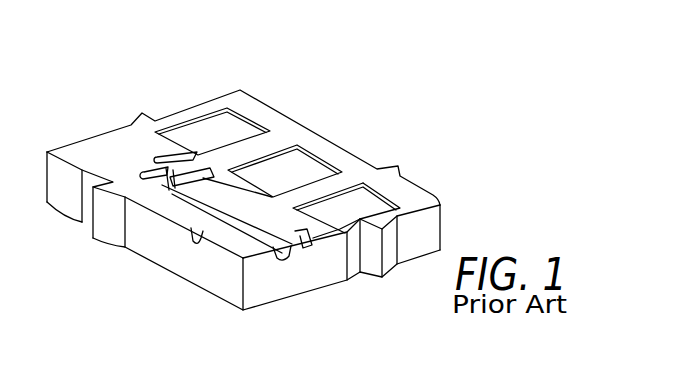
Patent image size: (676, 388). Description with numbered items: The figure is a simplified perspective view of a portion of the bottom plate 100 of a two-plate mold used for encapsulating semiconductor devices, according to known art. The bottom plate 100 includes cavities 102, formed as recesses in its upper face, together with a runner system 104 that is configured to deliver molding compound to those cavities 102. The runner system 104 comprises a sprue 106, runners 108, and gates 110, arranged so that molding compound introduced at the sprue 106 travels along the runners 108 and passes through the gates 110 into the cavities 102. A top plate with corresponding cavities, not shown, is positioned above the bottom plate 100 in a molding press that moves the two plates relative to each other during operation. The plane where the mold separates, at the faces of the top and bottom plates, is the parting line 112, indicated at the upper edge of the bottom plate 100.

The bottom plate 100 is at (148, 249).
The cavities 102 is at (300, 170).
The runner system 104 is at (131, 158).
The sprue 106 is at (193, 245).
The runners 108 is at (291, 254).
The gates 110 is at (197, 153).
The parting line 112 is at (440, 206).